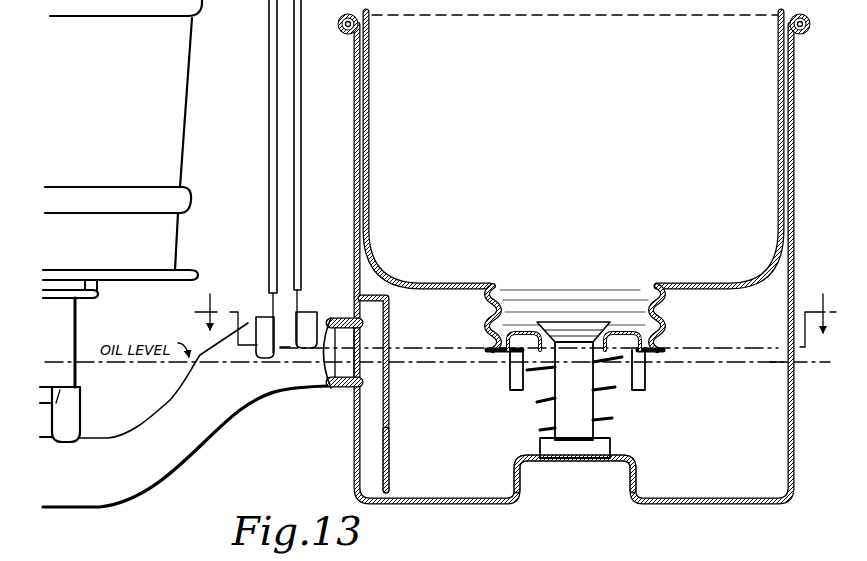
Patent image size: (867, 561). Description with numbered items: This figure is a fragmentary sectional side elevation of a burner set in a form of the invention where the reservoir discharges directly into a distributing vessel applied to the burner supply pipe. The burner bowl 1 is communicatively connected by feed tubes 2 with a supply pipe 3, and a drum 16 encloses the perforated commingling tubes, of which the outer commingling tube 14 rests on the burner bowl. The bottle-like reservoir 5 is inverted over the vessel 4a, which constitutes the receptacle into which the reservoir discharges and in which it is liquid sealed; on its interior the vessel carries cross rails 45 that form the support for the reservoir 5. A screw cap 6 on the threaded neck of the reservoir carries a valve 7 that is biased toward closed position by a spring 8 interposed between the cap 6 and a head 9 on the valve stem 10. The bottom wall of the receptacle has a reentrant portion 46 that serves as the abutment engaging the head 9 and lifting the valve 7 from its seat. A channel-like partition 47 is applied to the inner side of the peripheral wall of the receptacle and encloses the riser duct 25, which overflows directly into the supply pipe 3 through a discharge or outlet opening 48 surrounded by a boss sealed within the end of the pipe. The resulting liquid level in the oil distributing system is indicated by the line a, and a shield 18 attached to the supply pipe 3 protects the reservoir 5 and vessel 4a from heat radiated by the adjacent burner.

The burner bowl 1 is at (70, 334).
The feed tubes 2 is at (80, 410).
The supply pipe 3 is at (186, 415).
The vessel 4a is at (353, 236).
The reservoir 5 is at (573, 149).
The screw cap 6 is at (660, 328).
The valve 7 is at (573, 330).
The spring 8 is at (535, 401).
The head 9 is at (545, 447).
The valve stem 10 is at (574, 391).
The outer perforated commingling tube 14 is at (515, 310).
The drum 16 is at (122, 149).
The shield 18 is at (268, 157).
The riser duct 25 is at (380, 402).
The cross rails 45 is at (505, 372).
The reentrant portion 46 is at (612, 486).
The channel-like partition 47 is at (392, 447).
The discharge or outlet opening 48 is at (343, 388).
The liquid level a is at (775, 362).